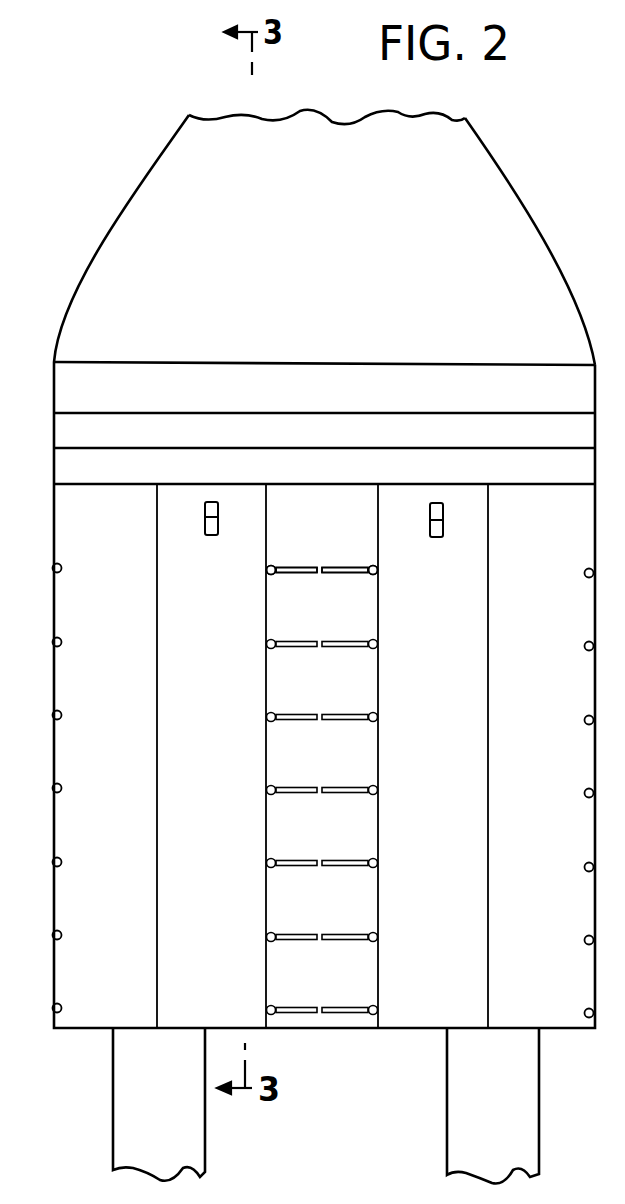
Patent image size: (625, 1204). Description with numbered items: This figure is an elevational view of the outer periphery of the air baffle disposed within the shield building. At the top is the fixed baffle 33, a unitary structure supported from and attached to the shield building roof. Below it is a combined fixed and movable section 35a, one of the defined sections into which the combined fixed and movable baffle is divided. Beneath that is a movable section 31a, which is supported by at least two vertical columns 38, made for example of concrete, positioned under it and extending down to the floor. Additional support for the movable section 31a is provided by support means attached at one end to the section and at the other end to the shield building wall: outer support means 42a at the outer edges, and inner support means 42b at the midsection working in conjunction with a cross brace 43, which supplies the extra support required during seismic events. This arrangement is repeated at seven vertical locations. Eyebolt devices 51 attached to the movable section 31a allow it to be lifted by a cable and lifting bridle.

The fixed baffle 33 is at (128, 212).
The combined fixed and movable section 35a is at (152, 378).
The movable section 31a is at (64, 1002).
The vertical column 38 is at (462, 1118).
The outer support means 42a is at (60, 648).
The inner support means 42b is at (380, 648).
The cross brace 43 is at (305, 575).
The eyebolt device 51 is at (210, 536).